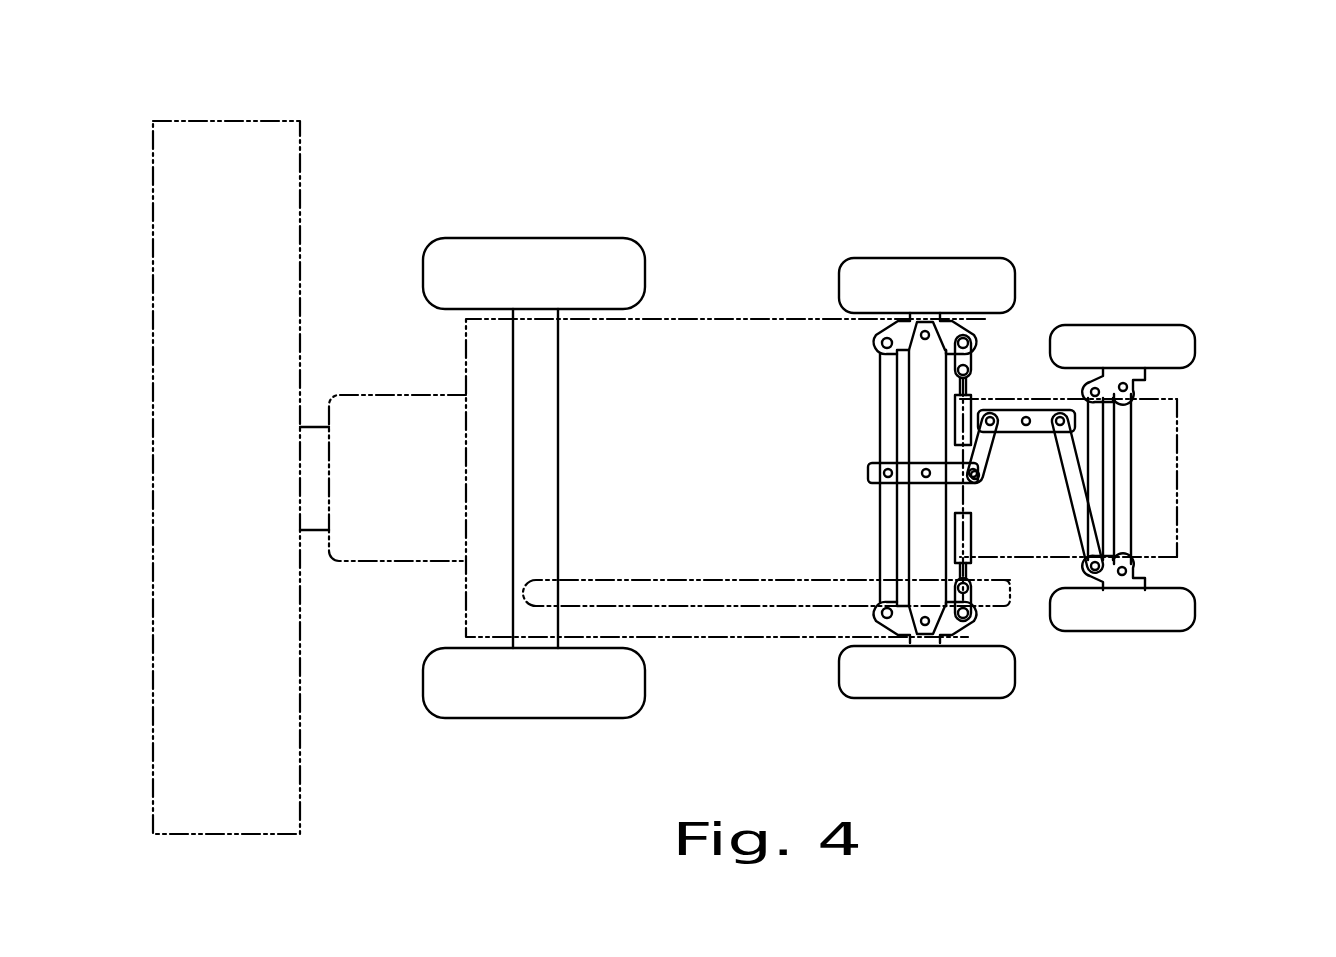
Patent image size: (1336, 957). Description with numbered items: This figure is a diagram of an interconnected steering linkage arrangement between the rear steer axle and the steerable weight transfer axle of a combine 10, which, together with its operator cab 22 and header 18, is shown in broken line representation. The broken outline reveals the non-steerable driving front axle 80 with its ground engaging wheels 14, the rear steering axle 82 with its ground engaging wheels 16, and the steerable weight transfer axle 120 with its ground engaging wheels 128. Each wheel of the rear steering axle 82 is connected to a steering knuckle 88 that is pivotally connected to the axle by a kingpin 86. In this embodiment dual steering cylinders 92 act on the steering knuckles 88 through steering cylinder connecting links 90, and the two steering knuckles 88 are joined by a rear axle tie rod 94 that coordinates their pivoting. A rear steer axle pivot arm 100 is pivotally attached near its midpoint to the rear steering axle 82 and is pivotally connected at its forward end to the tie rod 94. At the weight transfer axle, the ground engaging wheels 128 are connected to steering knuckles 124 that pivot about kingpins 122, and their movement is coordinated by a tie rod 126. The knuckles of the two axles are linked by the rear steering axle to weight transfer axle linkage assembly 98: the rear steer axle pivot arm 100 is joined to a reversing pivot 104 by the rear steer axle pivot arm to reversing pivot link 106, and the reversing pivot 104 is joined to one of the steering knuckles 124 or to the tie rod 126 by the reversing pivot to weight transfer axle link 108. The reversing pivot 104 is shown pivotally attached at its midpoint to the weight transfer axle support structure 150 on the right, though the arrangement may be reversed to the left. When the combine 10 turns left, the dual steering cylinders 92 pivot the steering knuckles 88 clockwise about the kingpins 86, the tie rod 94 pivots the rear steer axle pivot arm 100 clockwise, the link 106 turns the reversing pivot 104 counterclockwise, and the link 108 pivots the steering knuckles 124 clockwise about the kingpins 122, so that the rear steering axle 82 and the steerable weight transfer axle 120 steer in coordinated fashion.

The combine 10 is at (722, 318).
The ground engaging wheels 14 is at (515, 708).
The ground engaging wheels 16 is at (850, 698).
The header 18 is at (205, 121).
The operator cab 22 is at (352, 395).
The non-steerable driving front axle 80 is at (560, 377).
The rear steering axle 82 is at (910, 525).
The kingpin 86 is at (925, 331).
The steering knuckle 88 is at (875, 343).
The steering cylinder connecting link 90 is at (980, 352).
The dual steering cylinders 92 is at (955, 416).
The rear axle tie rod 94 is at (880, 375).
The rear steering axle to weight transfer axle linkage assembly 98 is at (1061, 398).
The rear steer axle pivot arm 100 is at (868, 472).
The reversing pivot 104 is at (1007, 410).
The rear steer axle pivot arm to reversing pivot link 106 is at (988, 457).
The reversing pivot to weight transfer axle link 108 is at (1068, 493).
The steerable weight transfer axle 120 is at (1133, 485).
The kingpins 122 is at (1124, 387).
The steering knuckles 124 is at (1147, 388).
The tie rod 126 is at (1105, 440).
The ground engaging wheels 128 is at (1137, 633).
The weight transfer axle support structure 150 is at (1180, 517).